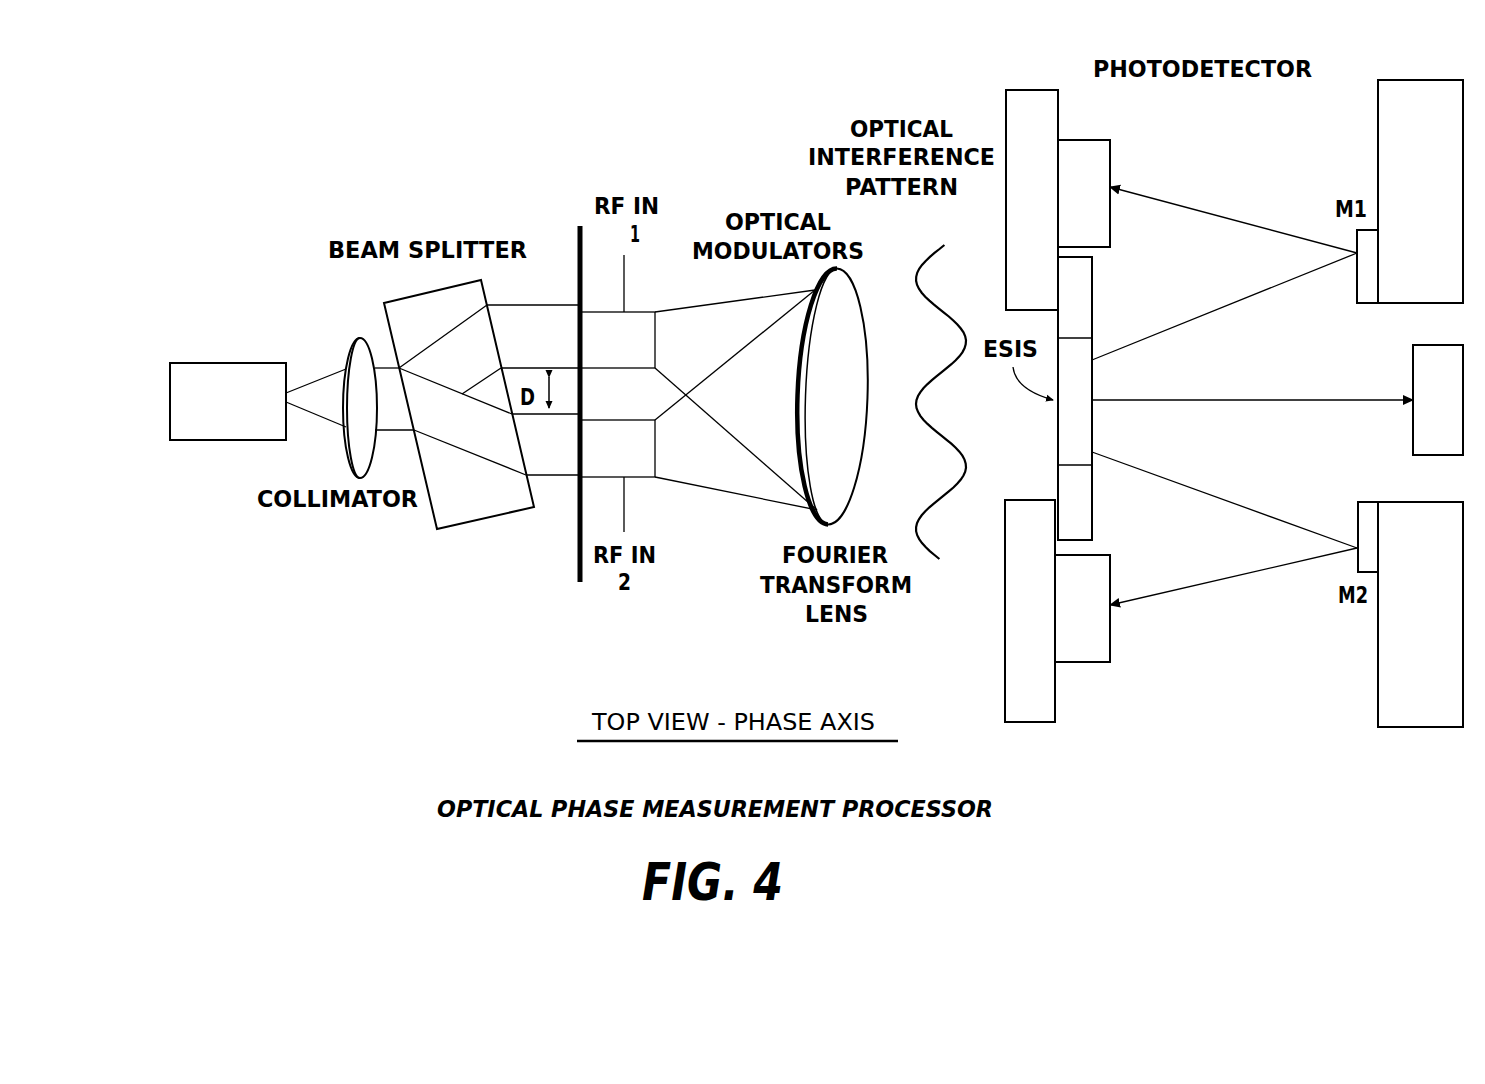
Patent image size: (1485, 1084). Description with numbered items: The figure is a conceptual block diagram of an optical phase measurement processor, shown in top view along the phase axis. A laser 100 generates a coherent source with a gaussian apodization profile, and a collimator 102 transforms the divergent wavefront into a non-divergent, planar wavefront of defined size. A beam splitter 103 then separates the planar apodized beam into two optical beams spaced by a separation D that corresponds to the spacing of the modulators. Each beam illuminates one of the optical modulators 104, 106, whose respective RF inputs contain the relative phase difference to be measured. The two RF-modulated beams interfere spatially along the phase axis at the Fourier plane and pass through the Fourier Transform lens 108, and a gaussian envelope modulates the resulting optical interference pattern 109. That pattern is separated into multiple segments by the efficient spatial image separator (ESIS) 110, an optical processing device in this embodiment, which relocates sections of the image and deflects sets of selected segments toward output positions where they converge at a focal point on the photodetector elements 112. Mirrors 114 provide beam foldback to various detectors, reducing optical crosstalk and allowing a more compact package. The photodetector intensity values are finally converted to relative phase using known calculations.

The laser 100 is at (258, 362).
The collimator 102 is at (352, 340).
The beam splitter 103 is at (480, 514).
The optical modulator 104 is at (642, 468).
The optical modulator 106 is at (639, 319).
The Fourier Transform lens 108 is at (853, 352).
The optical interference pattern 109 is at (942, 245).
The efficient spatial image separator (ESIS) 110 is at (1063, 438).
The photodetector elements 112 is at (1098, 220).
The mirrors 114 is at (1358, 277).